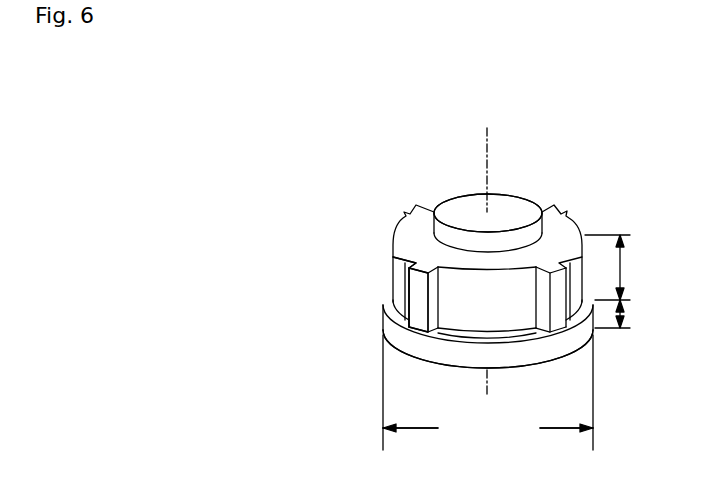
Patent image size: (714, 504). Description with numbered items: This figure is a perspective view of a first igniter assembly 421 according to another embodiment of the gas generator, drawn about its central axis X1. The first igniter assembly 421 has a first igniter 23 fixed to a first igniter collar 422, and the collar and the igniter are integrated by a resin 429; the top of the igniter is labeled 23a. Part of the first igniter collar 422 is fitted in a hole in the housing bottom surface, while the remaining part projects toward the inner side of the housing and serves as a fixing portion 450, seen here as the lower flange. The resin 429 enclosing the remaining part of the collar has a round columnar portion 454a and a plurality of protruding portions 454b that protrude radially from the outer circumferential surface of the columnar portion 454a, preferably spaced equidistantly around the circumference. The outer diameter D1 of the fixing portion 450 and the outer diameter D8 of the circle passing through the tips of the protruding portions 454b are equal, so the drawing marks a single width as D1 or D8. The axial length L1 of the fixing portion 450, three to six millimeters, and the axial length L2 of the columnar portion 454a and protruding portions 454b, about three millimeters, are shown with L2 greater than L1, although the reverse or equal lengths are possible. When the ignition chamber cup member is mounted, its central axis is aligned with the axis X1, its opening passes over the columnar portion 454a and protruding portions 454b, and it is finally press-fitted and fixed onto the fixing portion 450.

The first igniter 23 is at (453, 214).
The protrusion top surface 23a is at (453, 214).
The first igniter assembly 421 is at (573, 203).
The resin 429 is at (258, 245).
The columnar portion 454a is at (395, 255).
The protruding portions 454b is at (413, 297).
The first igniter collar 422 is at (383, 320).
The fixing portion 450 is at (383, 320).
The central axis X1 is at (489, 245).
The axial length of the fixing portion L1 is at (623, 314).
The axial length of the columnar portion L2 is at (618, 267).
The outer diameter of the fixing portion D1 is at (488, 392).
The outer diameter of the circle passing the tips of the protruding portions D8 is at (383, 450).